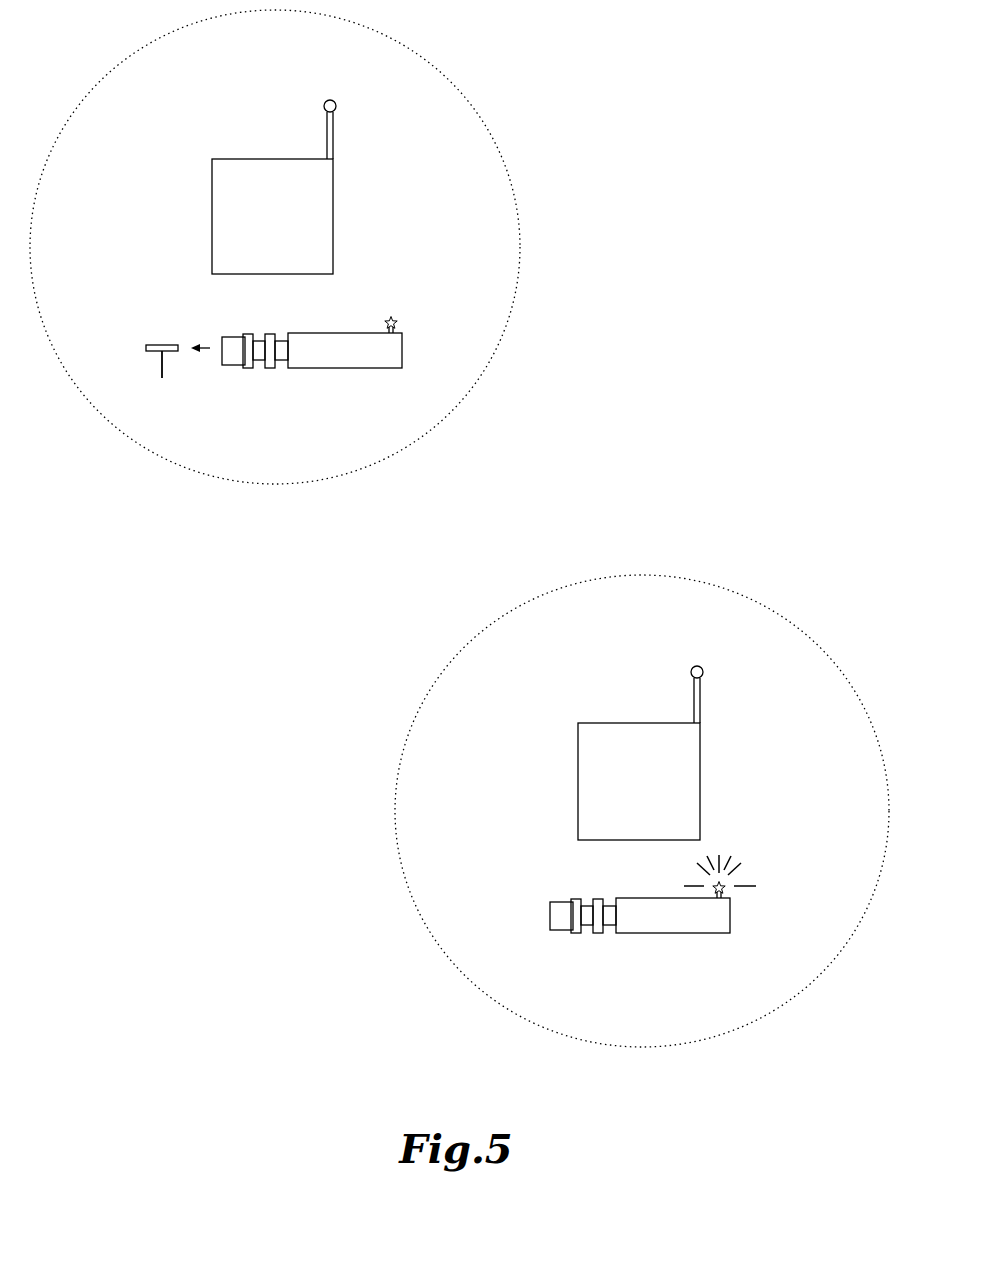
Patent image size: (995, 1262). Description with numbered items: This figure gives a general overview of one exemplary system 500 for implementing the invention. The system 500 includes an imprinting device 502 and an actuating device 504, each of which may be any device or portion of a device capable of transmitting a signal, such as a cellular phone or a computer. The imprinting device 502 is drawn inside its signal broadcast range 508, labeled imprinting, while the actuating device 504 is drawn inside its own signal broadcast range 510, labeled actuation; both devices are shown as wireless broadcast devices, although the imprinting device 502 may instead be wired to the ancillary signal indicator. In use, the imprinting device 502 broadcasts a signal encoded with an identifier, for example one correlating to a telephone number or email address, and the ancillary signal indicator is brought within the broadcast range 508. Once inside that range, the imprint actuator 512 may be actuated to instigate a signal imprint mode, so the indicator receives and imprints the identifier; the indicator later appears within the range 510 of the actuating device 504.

The system 500 is at (827, 172).
The imprinting device 502 is at (333, 216).
The actuating device 504 is at (578, 783).
The signal broadcast range of imprinting device 508 is at (520, 246).
The signal broadcast range of actuation device 510 is at (641, 575).
The imprint actuator 512 is at (162, 378).